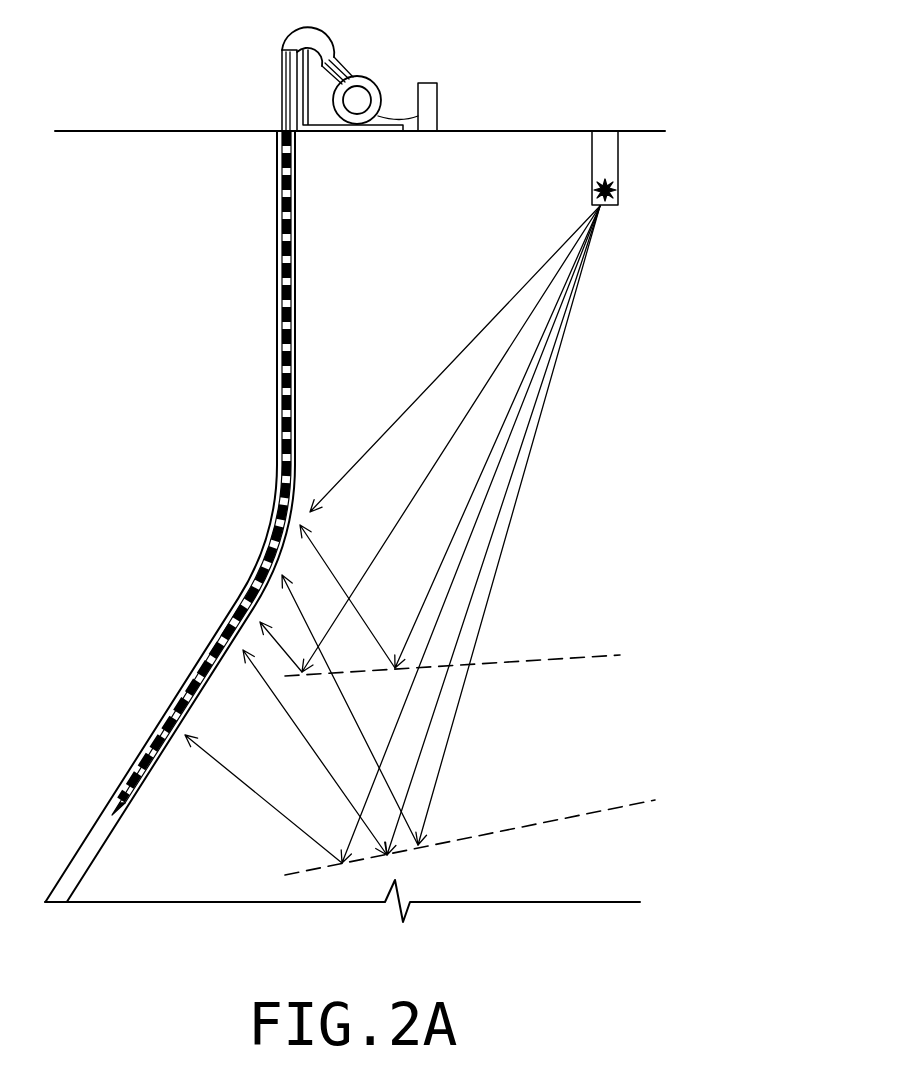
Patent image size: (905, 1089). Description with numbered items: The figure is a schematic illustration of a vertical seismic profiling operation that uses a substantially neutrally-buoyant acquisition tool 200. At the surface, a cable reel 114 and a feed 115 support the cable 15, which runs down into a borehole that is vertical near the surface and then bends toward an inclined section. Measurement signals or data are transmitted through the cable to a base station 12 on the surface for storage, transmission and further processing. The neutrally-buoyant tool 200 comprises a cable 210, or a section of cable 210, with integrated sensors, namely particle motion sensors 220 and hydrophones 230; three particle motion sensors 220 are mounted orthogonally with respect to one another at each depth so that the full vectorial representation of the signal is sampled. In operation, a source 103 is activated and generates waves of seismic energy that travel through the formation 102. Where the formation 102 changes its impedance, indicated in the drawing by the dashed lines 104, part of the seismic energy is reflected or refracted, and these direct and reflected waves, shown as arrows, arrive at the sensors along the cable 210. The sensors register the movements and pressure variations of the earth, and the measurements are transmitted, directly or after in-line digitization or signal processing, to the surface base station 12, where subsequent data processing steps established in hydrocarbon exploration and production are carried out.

The base station 12 is at (437, 85).
The cable 15 is at (282, 88).
The formation 102 is at (400, 311).
The source 103 is at (593, 181).
The dashed lines 104 is at (565, 808).
The cable reel 114 is at (393, 88).
The feed 115 is at (294, 42).
The neutrally-buoyant acquisition tool 200 is at (168, 516).
The cable 210 is at (150, 740).
The particle motion sensors 220 is at (232, 628).
The hydrophones 230 is at (285, 437).